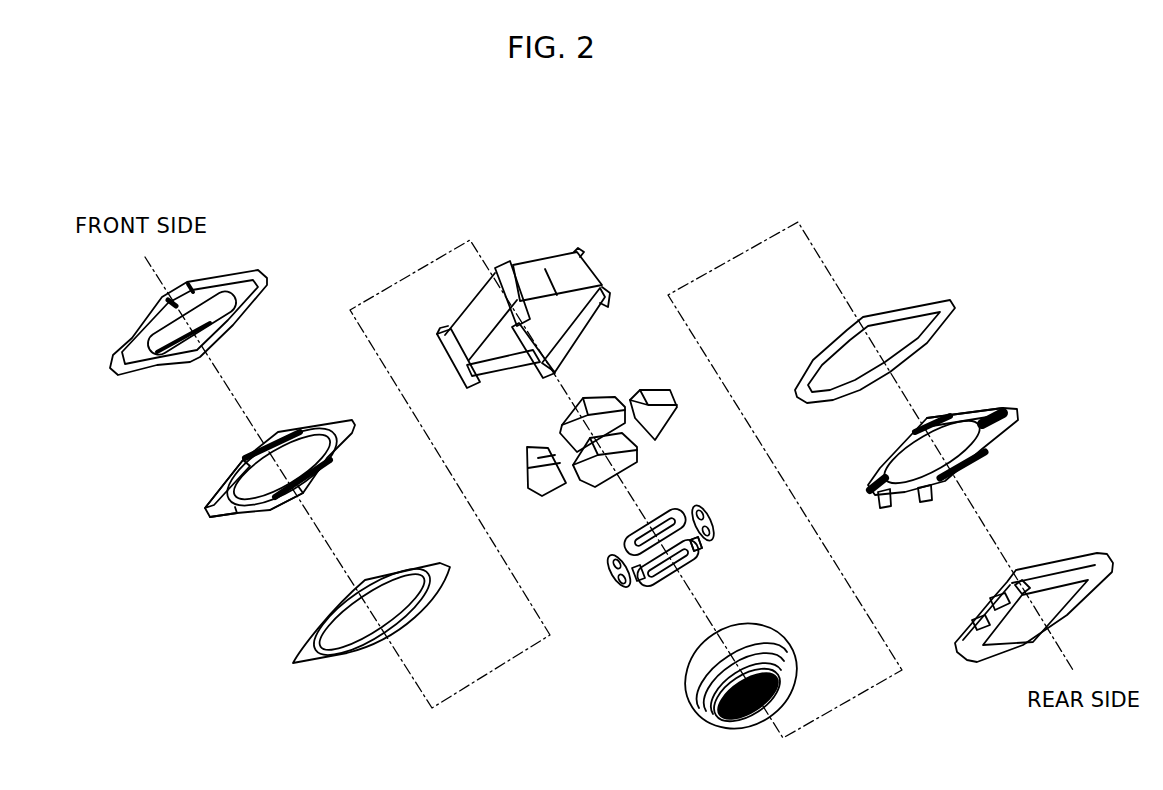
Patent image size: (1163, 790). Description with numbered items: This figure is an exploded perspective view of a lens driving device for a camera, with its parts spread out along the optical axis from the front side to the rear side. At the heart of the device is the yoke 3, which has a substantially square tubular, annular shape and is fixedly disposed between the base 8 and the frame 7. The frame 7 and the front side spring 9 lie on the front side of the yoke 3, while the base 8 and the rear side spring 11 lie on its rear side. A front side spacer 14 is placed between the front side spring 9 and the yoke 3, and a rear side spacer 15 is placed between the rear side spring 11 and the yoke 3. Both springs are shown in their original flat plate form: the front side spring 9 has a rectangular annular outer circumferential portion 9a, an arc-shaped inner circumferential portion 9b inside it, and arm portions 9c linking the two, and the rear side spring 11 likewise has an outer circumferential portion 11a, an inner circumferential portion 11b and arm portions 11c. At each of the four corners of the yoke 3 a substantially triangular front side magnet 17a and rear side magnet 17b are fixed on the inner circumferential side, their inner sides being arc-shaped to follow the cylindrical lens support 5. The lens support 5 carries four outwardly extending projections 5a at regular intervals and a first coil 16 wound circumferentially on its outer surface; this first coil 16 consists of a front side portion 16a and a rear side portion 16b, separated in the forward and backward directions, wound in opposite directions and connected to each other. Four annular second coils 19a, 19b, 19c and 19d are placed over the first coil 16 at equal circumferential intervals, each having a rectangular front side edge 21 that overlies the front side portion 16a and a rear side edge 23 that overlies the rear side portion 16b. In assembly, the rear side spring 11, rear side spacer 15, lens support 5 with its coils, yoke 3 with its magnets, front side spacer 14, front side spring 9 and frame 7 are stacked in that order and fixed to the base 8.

The yoke 3 is at (594, 260).
The lens support 5 is at (714, 730).
The projection 5a is at (752, 718).
The frame 7 is at (112, 378).
The base 8 is at (1100, 558).
The front side spring 9 is at (208, 513).
The outer circumferential portion 9a is at (214, 500).
The inner circumferential portion 9b is at (257, 514).
The arm portion 9c is at (223, 514).
The rear side spring 11 is at (993, 407).
The outer circumferential portion 11a is at (960, 408).
The inner circumferential portion 11b is at (985, 458).
The arm portion 11c is at (1000, 422).
The front side spacer 14 is at (300, 658).
The rear side spacer 15 is at (905, 306).
The first coil 16 is at (600, 712).
The front side portion 16a is at (692, 676).
The rear side portion 16b is at (697, 700).
The front side magnet 17a is at (537, 460).
The rear side magnet 17b is at (540, 484).
The second coil 19a is at (658, 508).
The second coil 19b is at (610, 560).
The second coil 19c is at (688, 548).
The second coil 19d is at (692, 505).
The front side edge 21 is at (640, 530).
The rear side edge 23 is at (705, 553).